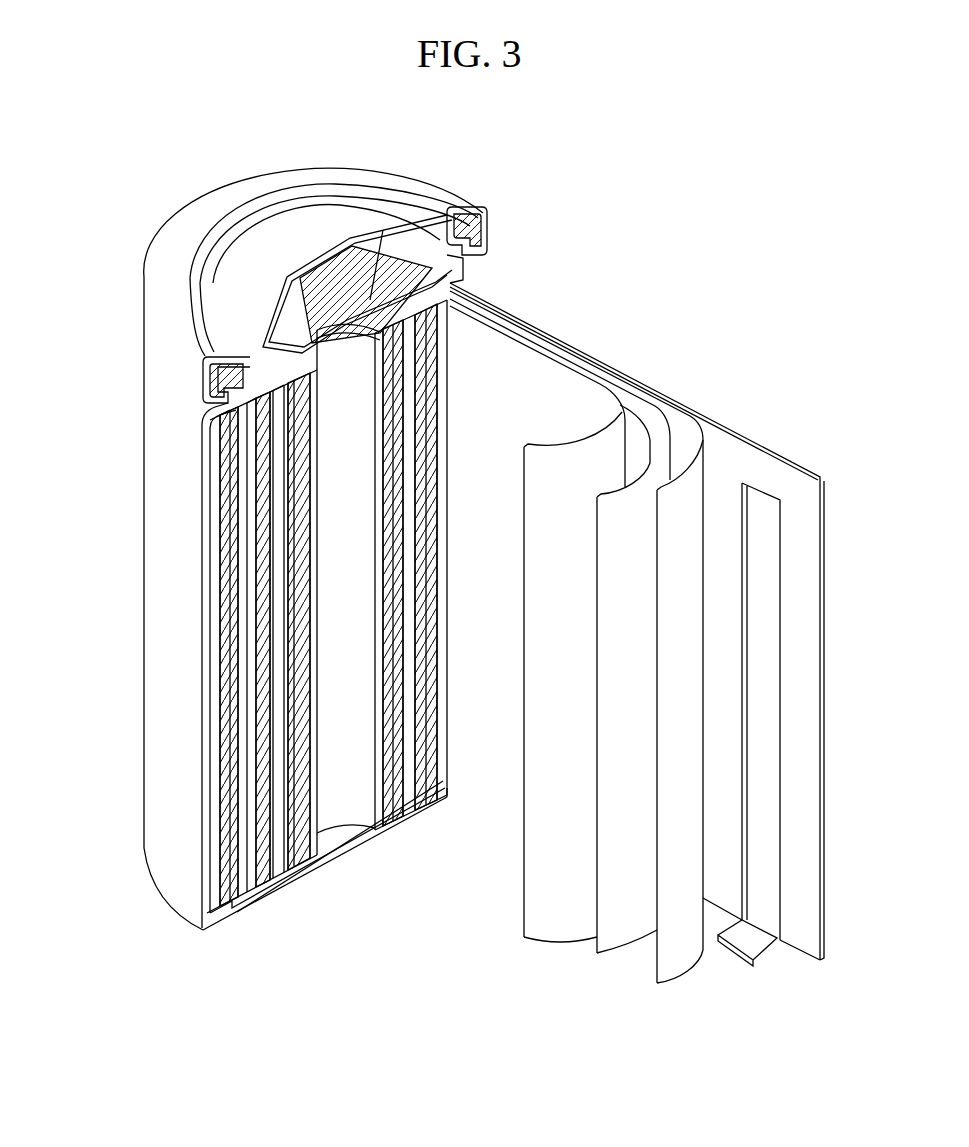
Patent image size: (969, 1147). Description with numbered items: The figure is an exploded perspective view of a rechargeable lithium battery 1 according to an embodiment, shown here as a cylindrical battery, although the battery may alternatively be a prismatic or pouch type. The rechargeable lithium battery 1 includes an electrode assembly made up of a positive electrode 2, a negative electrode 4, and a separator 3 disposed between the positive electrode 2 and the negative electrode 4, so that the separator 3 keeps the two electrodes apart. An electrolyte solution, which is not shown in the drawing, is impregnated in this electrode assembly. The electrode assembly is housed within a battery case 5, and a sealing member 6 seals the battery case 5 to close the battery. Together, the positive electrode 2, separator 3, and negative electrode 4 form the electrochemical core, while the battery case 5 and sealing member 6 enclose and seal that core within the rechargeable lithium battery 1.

The rechargeable lithium battery 1 is at (680, 211).
The positive electrode 2 is at (767, 447).
The separator 3 is at (567, 360).
The negative electrode 4 is at (638, 420).
The battery case 5 is at (160, 685).
The sealing member 6 is at (321, 215).